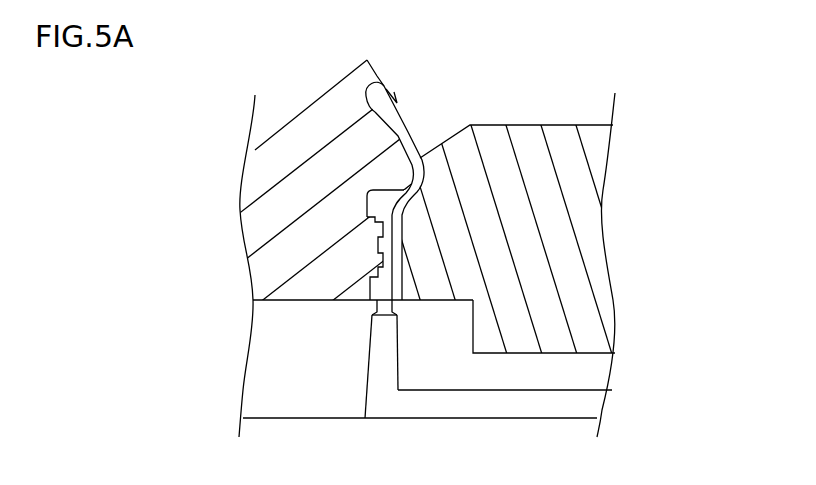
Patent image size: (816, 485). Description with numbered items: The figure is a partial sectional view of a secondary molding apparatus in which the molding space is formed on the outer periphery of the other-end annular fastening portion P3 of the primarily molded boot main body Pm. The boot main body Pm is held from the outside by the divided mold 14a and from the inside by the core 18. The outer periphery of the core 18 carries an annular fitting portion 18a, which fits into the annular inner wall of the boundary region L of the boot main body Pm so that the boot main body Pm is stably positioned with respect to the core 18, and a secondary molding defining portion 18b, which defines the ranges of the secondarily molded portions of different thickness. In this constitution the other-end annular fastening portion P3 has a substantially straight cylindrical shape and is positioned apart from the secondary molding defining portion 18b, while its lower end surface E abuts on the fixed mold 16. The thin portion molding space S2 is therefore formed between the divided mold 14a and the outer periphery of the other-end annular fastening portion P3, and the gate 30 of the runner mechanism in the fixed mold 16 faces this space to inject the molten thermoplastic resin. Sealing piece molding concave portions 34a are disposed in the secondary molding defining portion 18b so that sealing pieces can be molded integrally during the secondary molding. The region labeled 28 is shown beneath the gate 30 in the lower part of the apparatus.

The boundary region L is at (384, 149).
The boot main body Pm is at (358, 82).
The core 18 is at (563, 124).
The annular fitting portion 18a is at (412, 165).
The secondary molding defining portion 18b is at (386, 198).
The other-end annular fastening portion P3 is at (375, 247).
The divided mold 14a is at (257, 278).
The fixed mold 16 is at (257, 379).
The gate 30 is at (377, 305).
The plate 28 is at (430, 405).
The lower end surface E is at (393, 303).
The thin portion molding space S2 is at (422, 192).
The sealing piece molding concave portion 34a is at (422, 227).